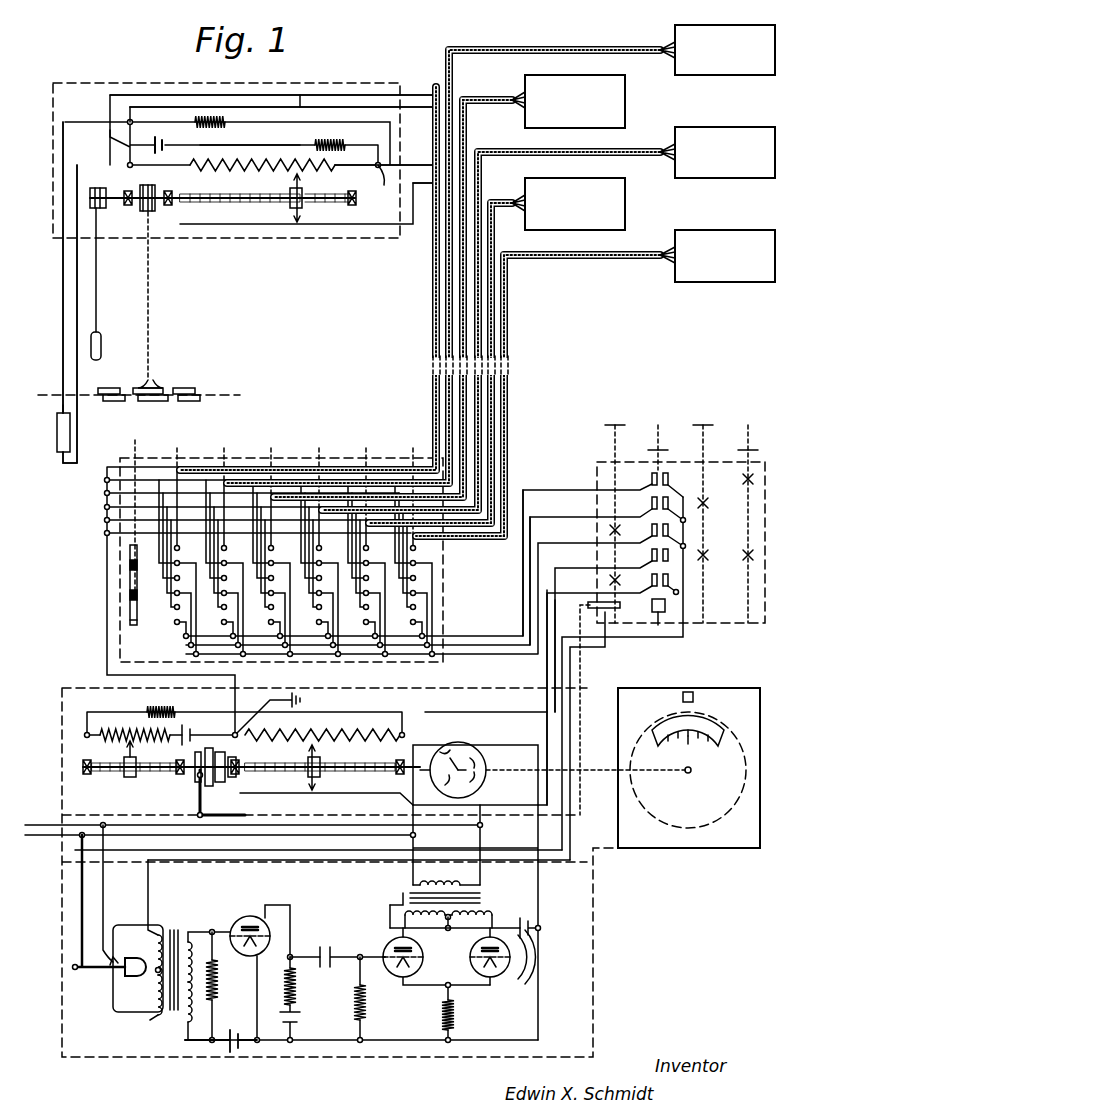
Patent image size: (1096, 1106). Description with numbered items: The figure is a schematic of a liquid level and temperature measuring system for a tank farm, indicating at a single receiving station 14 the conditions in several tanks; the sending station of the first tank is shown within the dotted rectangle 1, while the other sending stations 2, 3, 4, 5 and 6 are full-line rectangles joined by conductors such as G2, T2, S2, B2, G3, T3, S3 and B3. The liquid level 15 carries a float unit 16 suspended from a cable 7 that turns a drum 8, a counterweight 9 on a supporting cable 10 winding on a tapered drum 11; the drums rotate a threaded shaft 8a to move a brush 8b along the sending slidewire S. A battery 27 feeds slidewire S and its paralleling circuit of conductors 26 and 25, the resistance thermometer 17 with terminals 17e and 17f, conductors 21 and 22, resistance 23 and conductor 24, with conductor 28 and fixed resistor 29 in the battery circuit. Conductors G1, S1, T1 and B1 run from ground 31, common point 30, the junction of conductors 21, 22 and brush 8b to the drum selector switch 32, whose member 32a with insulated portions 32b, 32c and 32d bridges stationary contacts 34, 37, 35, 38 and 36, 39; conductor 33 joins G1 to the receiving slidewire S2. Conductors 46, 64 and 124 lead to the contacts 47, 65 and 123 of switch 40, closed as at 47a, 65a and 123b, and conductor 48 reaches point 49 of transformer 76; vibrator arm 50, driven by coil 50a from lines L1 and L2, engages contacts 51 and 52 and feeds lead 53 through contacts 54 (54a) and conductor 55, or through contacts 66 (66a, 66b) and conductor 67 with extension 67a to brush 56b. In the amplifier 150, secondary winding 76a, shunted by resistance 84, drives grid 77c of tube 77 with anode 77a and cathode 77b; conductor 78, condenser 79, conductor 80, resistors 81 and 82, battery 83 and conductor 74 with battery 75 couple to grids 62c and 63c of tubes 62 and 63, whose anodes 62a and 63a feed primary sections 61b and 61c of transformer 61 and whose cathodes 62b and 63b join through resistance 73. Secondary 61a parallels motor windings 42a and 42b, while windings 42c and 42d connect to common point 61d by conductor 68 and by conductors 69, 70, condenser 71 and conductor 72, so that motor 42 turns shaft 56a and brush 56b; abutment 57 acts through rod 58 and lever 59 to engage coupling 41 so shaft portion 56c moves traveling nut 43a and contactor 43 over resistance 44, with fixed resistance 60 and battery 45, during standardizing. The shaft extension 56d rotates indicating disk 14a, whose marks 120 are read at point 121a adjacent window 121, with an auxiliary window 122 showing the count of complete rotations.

The sending station 1 is at (122, 80).
The sending station 2 is at (501, 254).
The sending station 3 is at (449, 286).
The sending station 4 is at (548, 318).
The sending station 5 is at (497, 350).
The sending station 6 is at (595, 383).
The cable 7 is at (153, 303).
The drum 8 is at (136, 212).
The threaded shaft 8a is at (240, 202).
The slide wire brush 8b is at (306, 183).
The counterweight 9 is at (101, 345).
The supporting cable 10 is at (96, 268).
The drum 11 is at (89, 183).
The receiving station 14 is at (610, 880).
The indicating disk 14a is at (710, 822).
The liquid level 15 is at (220, 398).
The float unit 16 is at (160, 380).
The resistance type thermometer 17 is at (57, 437).
The upper terminal 17e is at (63, 415).
The lower terminal 17f is at (63, 460).
The conductor 21 is at (60, 258).
The conductor 22 is at (152, 108).
The resistance 23 is at (210, 122).
The conductor 24 is at (272, 108).
The conductor 25 is at (60, 290).
The conductor 26 is at (112, 147).
The battery 27 is at (173, 138).
The conductor 28 is at (224, 141).
The fixed resistor 29 is at (315, 145).
The common point 30 is at (376, 188).
The ground 31 is at (277, 698).
The selector switch 32 is at (290, 458).
The member 32a is at (128, 626).
The insulated portion 32b is at (128, 604).
The insulated portion 32c is at (128, 580).
The insulated portion 32d is at (128, 556).
The conductor 33 is at (108, 657).
The stationary contact 34 is at (263, 568).
The stationary contact 35 is at (238, 568).
The stationary contact 36 is at (182, 563).
The drum contact 37 is at (177, 624).
The drum contact 38 is at (225, 568).
The drum contact 39 is at (213, 568).
The selector switch 40 is at (672, 415).
The mechanical coupling 41 is at (228, 752).
The motor 42 is at (478, 748).
The motor winding 42a is at (476, 783).
The motor winding 42b is at (455, 757).
The motor winding 42c is at (476, 755).
The motor winding 42d is at (427, 777).
The contactor 43 is at (150, 750).
The traveling nut 43a is at (130, 777).
The resistance 44 is at (112, 735).
The battery 45 is at (204, 732).
The conductor 46 is at (470, 662).
The contacts 47 is at (669, 520).
The closed indication 47a is at (610, 530).
The conductor 48 is at (688, 632).
The point 49 is at (155, 980).
The vibrator arm 50 is at (98, 978).
The coil 50a is at (106, 940).
The contact 51 is at (118, 952).
The contact 52 is at (112, 983).
The lead 53 is at (71, 912).
The contacts 54 is at (669, 567).
The closed indication 54a is at (610, 579).
The conductor 55 is at (545, 678).
The shaft 56a is at (305, 778).
The brush 56b is at (326, 753).
The shaft portion 56c is at (103, 772).
The shaft extension 56d is at (600, 770).
The abutment member 57 is at (655, 625).
The rod 58 is at (600, 615).
The pivoted lever 59 is at (200, 785).
The fixed resistance 60 is at (176, 702).
The transformer 61 is at (488, 906).
The secondary winding 61a is at (476, 888).
The primary winding section 61b is at (390, 908).
The primary winding section 61c is at (463, 918).
The common point 61d is at (440, 932).
The electron tube 62 is at (395, 972).
The anode 62a is at (394, 939).
The cathode 62b is at (402, 978).
The grid 62c is at (384, 951).
The electron tube 63 is at (478, 953).
The anode 63a is at (504, 960).
The cathode 63b is at (490, 977).
The grid 63c is at (470, 968).
The conductor 64 is at (473, 638).
The contacts 65 is at (652, 505).
The closed indication 65a is at (721, 503).
The contacts 66 is at (652, 557).
The closed indication 66a is at (721, 554).
The closed indication 66b is at (756, 555).
The conductor 67 is at (582, 559).
The slidewire extension 67a is at (350, 793).
The conductor 68 is at (388, 886).
The conductor 69 is at (534, 832).
The conductor 70 is at (536, 921).
The condenser 71 is at (534, 946).
The conductor 72 is at (532, 970).
The resistance 73 is at (442, 1021).
The conductor 74 is at (536, 1037).
The battery 75 is at (234, 1056).
The transformer 76 is at (174, 958).
The secondary winding 76a is at (188, 1003).
The electron tube 77 is at (233, 922).
The anode 77a is at (248, 920).
The cathode 77b is at (244, 945).
The grid 77c is at (264, 918).
The conductor 78 is at (303, 965).
The condenser 79 is at (329, 947).
The conductor 80 is at (354, 976).
The resistor 81 is at (347, 1014).
The resistor 82 is at (296, 985).
The battery 83 is at (298, 1024).
The resistance 84 is at (226, 966).
The calibrated marks 120 is at (680, 724).
The window 121 is at (714, 730).
The indicating point 121a is at (692, 736).
The auxiliary window 122 is at (698, 694).
The contacts 123 is at (652, 482).
The closed indication 123b is at (756, 479).
The conductor 124 is at (508, 640).
The amplifier 150 is at (590, 990).
The slide wire resistance S is at (242, 176).
The conductor S1 is at (408, 150).
The receiving potentiometer slidewire S2 is at (347, 737).
The conductor S3 is at (512, 103).
The conductor G1 is at (416, 90).
The conductor G2 is at (660, 48).
The conductor G3 is at (512, 96).
The conductor T1 is at (408, 120).
The conductor T2 is at (660, 48).
The conductor T3 is at (512, 96).
The conductor B1 is at (155, 570).
The conductor B2 is at (662, 56).
The conductor B3 is at (519, 106).
The supply line L1 is at (45, 825).
The supply line L2 is at (32, 848).